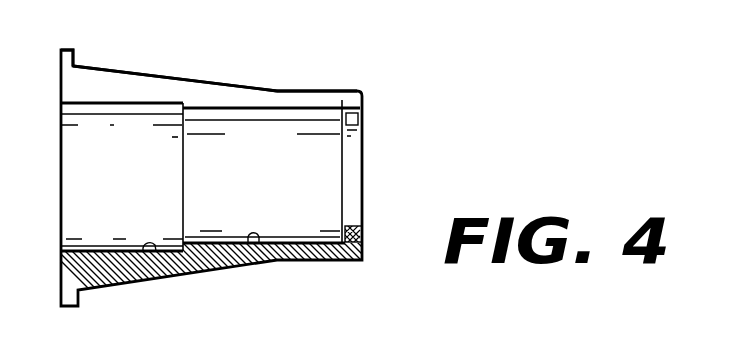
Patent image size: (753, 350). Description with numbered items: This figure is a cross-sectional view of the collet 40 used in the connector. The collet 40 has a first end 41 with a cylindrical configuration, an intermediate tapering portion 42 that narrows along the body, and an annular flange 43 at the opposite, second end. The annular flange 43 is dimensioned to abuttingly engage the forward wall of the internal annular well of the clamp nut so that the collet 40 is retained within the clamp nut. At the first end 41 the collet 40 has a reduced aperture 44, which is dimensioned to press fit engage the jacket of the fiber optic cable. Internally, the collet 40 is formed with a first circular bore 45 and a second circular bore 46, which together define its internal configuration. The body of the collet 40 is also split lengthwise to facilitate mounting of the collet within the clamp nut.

The collet 40 is at (250, 52).
The first end 41 is at (315, 88).
The intermediate tapering portion 42 is at (148, 75).
The annular flange 43 is at (72, 50).
The reduced aperture 44 is at (352, 228).
The first circular bore 45 is at (248, 243).
The second circular bore 46 is at (143, 251).